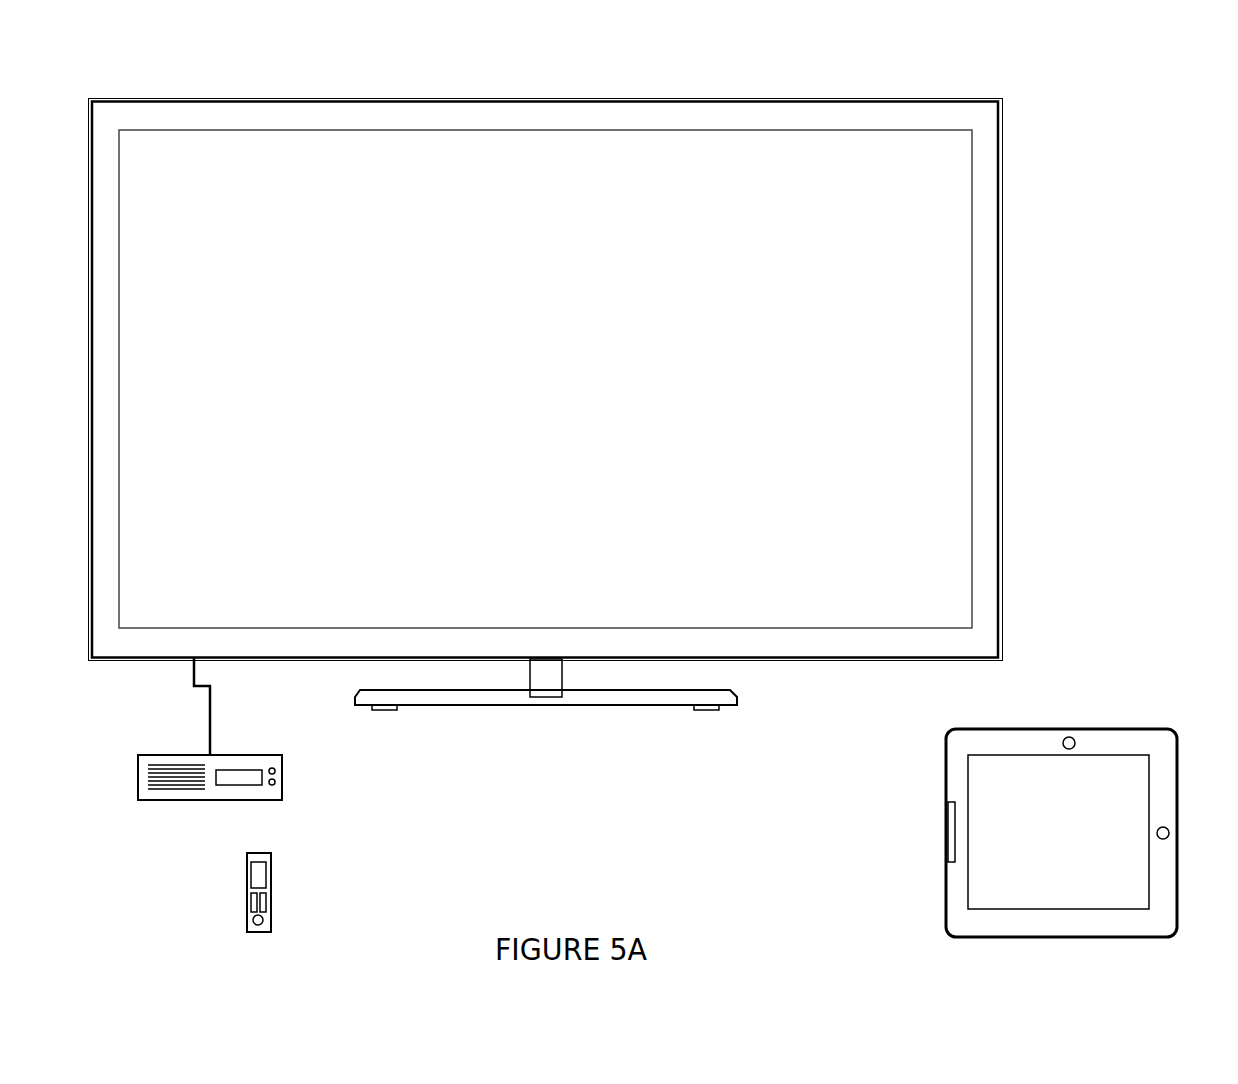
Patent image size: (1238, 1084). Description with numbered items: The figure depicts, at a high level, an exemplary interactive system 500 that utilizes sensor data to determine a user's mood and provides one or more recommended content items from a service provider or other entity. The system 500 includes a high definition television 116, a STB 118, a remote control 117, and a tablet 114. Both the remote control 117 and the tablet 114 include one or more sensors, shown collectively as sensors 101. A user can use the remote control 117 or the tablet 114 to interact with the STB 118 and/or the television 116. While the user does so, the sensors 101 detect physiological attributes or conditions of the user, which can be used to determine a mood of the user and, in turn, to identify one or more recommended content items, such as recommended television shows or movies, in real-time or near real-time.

The interactive system 500 is at (1088, 100).
The high definition television 116 is at (547, 99).
The STB 118 is at (275, 751).
The remote control 117 is at (271, 854).
The tablet 114 is at (1163, 782).
The sensors 101 is at (274, 784).